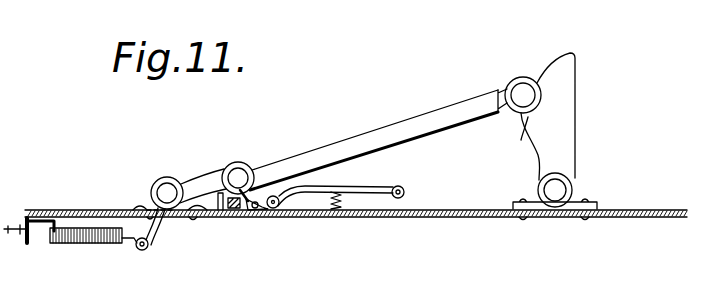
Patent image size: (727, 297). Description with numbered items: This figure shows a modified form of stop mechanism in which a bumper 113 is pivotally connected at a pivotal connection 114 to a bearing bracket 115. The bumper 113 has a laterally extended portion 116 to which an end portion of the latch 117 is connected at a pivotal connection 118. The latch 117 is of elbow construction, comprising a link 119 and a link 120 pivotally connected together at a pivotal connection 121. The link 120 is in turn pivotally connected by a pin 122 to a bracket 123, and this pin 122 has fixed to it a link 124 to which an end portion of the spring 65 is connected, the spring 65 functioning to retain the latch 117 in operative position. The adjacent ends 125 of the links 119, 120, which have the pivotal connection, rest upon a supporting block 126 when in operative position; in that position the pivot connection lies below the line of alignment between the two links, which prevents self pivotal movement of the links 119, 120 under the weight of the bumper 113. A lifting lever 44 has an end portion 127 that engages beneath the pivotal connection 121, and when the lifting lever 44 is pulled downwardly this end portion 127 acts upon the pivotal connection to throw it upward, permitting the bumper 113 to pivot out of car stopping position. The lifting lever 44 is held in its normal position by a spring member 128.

The lifting lever 44 is at (367, 193).
The spring 65 is at (83, 247).
The bumper 113 is at (560, 127).
The pivotal connection 114 is at (561, 186).
The bearing bracket 115 is at (574, 203).
The laterally extended portion 116 is at (528, 117).
The latch 117 is at (420, 131).
The pivotal connection 118 is at (520, 87).
The link 119 is at (380, 130).
The link 120 is at (200, 177).
The pivotal connection 121 is at (241, 161).
The pin 122 is at (164, 176).
The bracket 123 is at (193, 212).
The link 124 is at (147, 210).
The adjacent ends 125 is at (221, 211).
The supporting block 126 is at (262, 168).
The end portion 127 is at (283, 170).
The spring member 128 is at (348, 192).